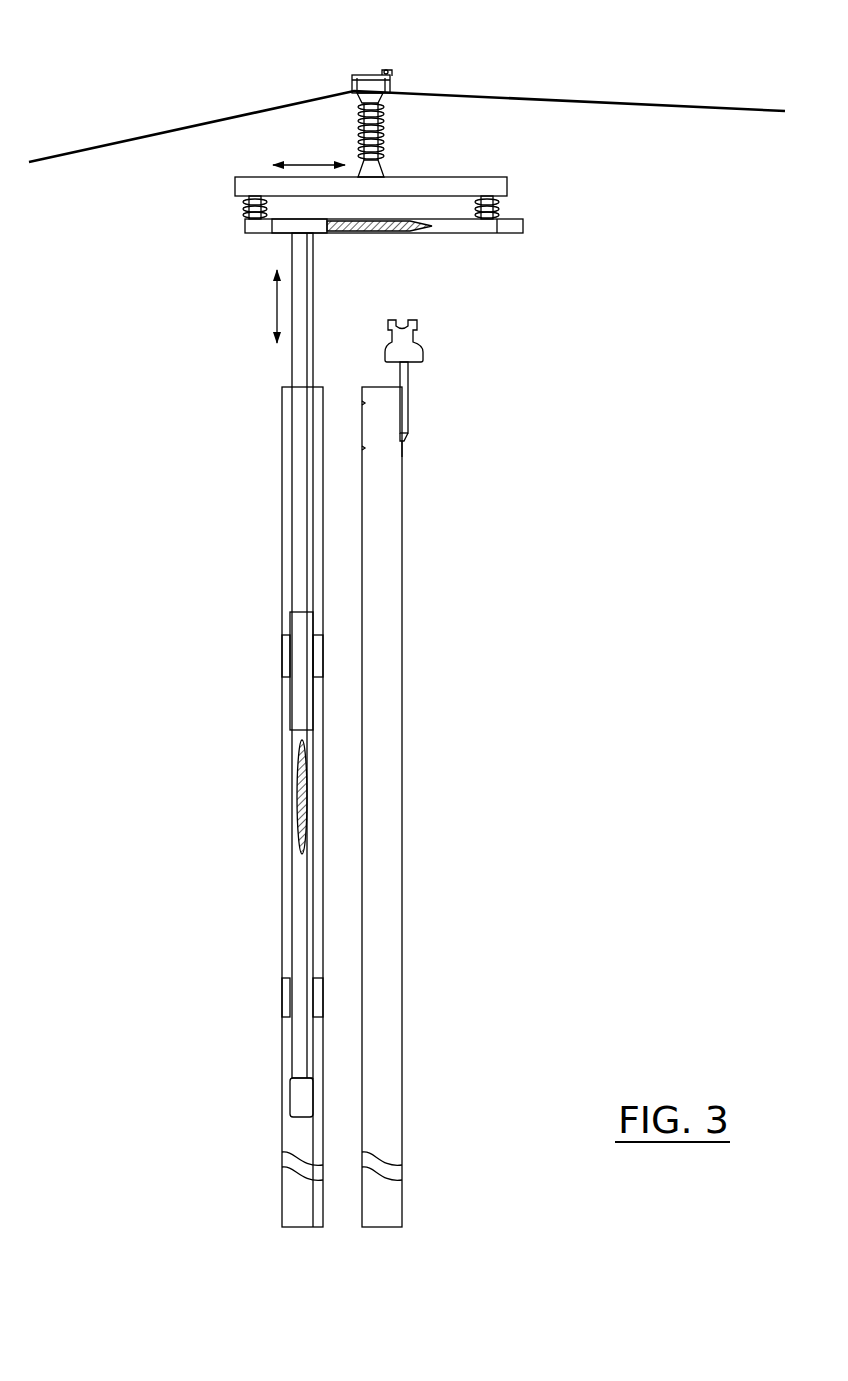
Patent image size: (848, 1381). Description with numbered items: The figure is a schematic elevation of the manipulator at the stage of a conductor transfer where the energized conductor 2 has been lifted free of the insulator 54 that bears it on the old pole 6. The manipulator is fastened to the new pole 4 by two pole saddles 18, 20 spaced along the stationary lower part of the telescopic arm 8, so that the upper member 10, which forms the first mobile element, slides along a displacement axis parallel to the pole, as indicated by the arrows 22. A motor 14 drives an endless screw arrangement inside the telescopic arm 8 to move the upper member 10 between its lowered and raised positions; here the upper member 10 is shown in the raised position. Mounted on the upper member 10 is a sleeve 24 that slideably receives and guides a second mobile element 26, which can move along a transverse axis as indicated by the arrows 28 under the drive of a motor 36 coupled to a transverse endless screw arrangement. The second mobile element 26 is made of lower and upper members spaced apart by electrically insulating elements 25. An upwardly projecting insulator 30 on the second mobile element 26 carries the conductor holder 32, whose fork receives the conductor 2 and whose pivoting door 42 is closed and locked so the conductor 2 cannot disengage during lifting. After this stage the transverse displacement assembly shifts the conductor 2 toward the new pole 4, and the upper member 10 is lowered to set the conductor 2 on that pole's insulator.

The conductor 2 is at (552, 96).
The new pole 4 is at (285, 1132).
The old pole 6 is at (402, 1133).
The telescopic arm 8 is at (213, 807).
The upper member 10 is at (295, 376).
The motor 14 is at (297, 1095).
The pole saddle 18 is at (285, 985).
The pole saddle 20 is at (287, 652).
The arrows 22 is at (277, 308).
The sleeve 24 is at (278, 233).
The electrically insulating elements 25 is at (245, 205).
The second mobile element 26 is at (507, 180).
The arrows 28 is at (308, 163).
The insulator 30 is at (384, 131).
The conductor holder 32 is at (362, 92).
The motor 36 is at (512, 233).
The door 42 is at (368, 74).
The insulator 54 is at (420, 352).